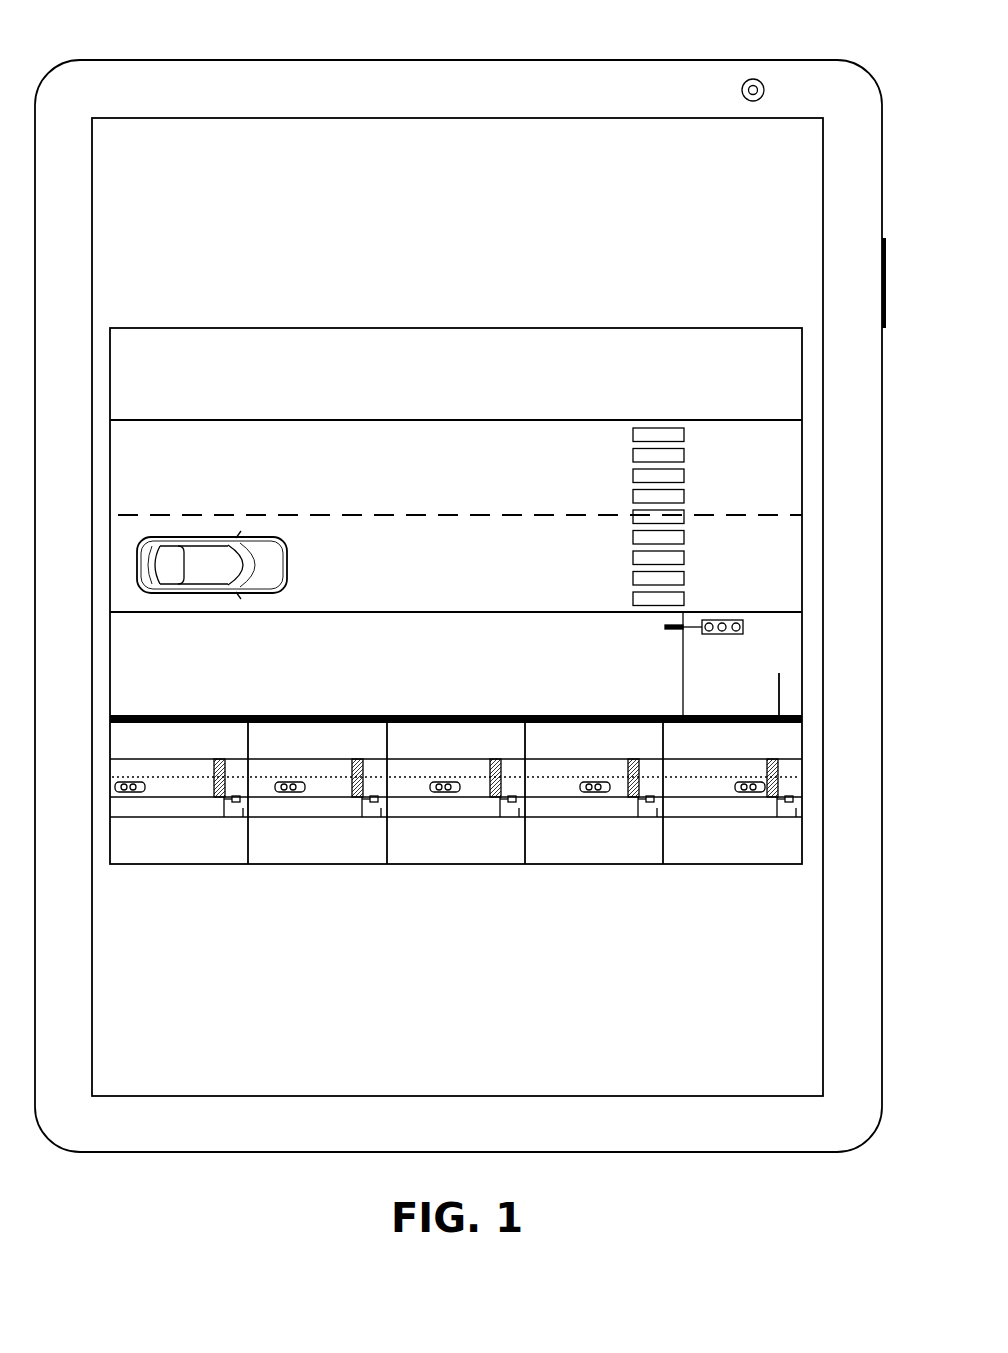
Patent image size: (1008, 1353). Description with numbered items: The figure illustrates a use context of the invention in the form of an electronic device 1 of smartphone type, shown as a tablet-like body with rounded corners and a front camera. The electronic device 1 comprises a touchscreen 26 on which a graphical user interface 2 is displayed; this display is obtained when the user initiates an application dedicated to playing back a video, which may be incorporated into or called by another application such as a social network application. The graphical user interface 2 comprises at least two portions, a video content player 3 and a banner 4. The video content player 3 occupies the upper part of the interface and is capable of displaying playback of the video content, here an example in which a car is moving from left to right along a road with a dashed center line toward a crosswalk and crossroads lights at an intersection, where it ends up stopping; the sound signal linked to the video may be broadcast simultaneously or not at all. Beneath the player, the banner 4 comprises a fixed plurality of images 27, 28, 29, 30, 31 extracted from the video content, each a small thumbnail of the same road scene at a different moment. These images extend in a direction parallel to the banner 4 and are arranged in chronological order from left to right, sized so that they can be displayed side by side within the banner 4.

The electronic device 1 is at (210, 60).
The touchscreen 26 is at (615, 118).
The graphical user interface 2 is at (86, 328).
The video content player 3 is at (831, 328).
The banner 4 is at (831, 725).
The image 27 is at (148, 864).
The image 28 is at (288, 864).
The image 29 is at (487, 864).
The image 30 is at (623, 864).
The image 31 is at (760, 864).